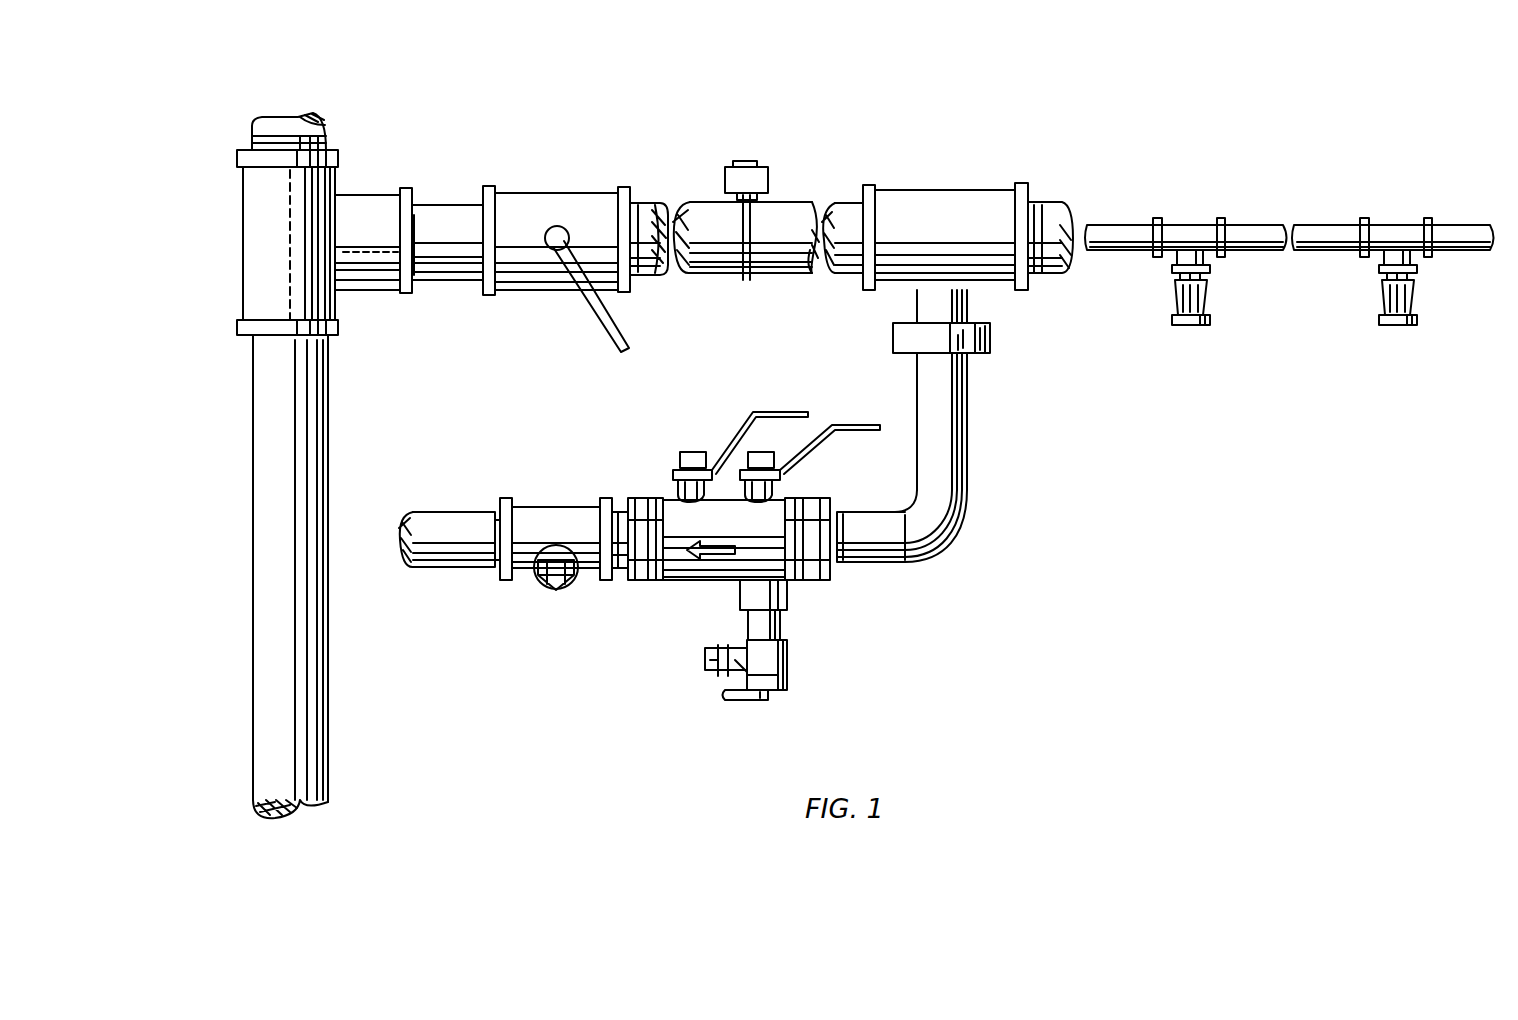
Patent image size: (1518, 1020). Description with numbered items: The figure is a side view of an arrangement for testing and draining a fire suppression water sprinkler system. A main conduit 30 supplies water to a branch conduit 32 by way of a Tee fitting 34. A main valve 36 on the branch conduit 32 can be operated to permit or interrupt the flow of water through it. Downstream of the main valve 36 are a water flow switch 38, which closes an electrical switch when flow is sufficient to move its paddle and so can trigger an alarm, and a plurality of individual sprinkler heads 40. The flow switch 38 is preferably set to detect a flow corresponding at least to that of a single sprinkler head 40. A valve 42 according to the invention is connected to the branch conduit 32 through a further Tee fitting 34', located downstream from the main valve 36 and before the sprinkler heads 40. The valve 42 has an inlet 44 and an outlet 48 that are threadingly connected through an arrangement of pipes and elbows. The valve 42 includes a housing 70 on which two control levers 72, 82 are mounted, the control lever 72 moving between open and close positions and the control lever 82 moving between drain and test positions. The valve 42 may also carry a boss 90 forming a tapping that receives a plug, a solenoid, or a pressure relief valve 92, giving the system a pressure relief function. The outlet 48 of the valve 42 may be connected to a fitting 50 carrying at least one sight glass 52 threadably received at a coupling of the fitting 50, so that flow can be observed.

The main conduit 30 is at (265, 428).
The branch conduit 32 is at (447, 217).
The Tee fitting 34 is at (373, 208).
The further Tee fitting 34' is at (947, 205).
The main valve 36 is at (554, 197).
The water flow switch 38 is at (762, 165).
The sprinkler heads 40 is at (1208, 295).
The valve 42 is at (690, 598).
The inlet 44 is at (837, 540).
The outlet 48 is at (622, 552).
The fitting 50 is at (556, 507).
The sight glass 52 is at (555, 590).
The housing 70 is at (795, 497).
The control lever 72 is at (772, 410).
The control lever 82 is at (845, 425).
The boss 90 is at (792, 595).
The pressure relief valve 92 is at (787, 662).